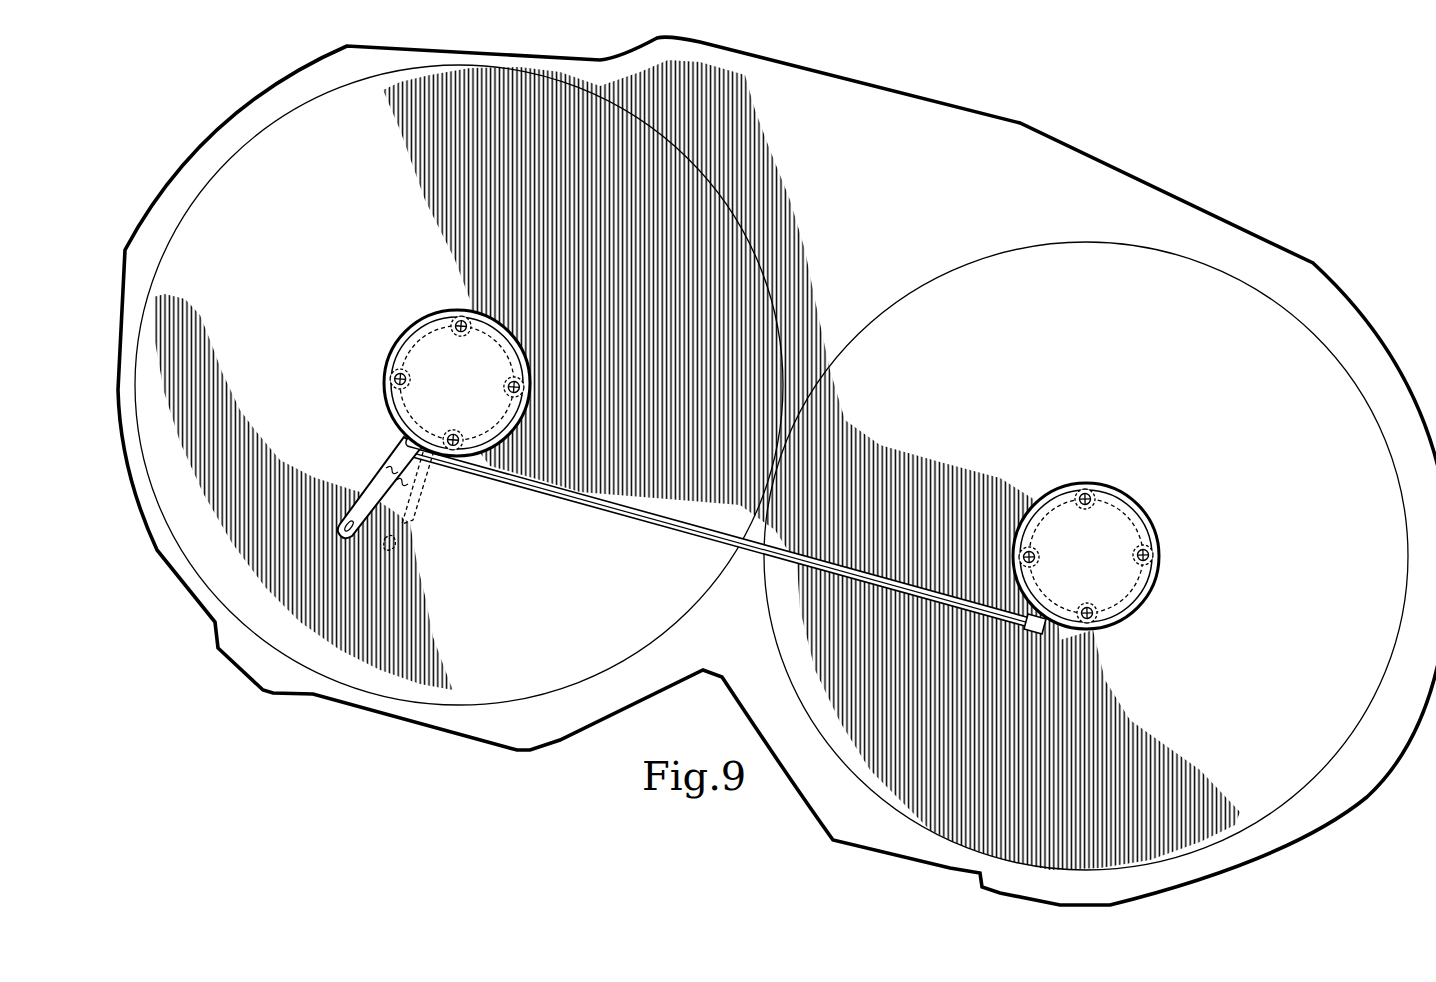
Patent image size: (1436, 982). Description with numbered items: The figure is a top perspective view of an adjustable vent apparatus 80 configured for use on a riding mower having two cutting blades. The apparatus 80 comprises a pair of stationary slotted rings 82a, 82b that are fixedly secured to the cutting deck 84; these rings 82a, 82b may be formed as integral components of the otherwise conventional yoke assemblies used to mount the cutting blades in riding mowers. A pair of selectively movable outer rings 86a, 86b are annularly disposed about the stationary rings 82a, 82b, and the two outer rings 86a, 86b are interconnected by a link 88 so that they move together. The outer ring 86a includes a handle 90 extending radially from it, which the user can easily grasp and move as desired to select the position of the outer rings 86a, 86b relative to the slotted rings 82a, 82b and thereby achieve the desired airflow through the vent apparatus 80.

The adjustable vent apparatus 80 is at (384, 312).
The stationary slotted ring 82a is at (410, 347).
The stationary slotted ring 82b is at (1022, 537).
The cutting deck 84 is at (1131, 389).
The selectively movable outer ring 86a is at (386, 382).
The selectively movable outer ring 86b is at (1156, 532).
The link 88 is at (666, 518).
The handle 90 is at (375, 475).